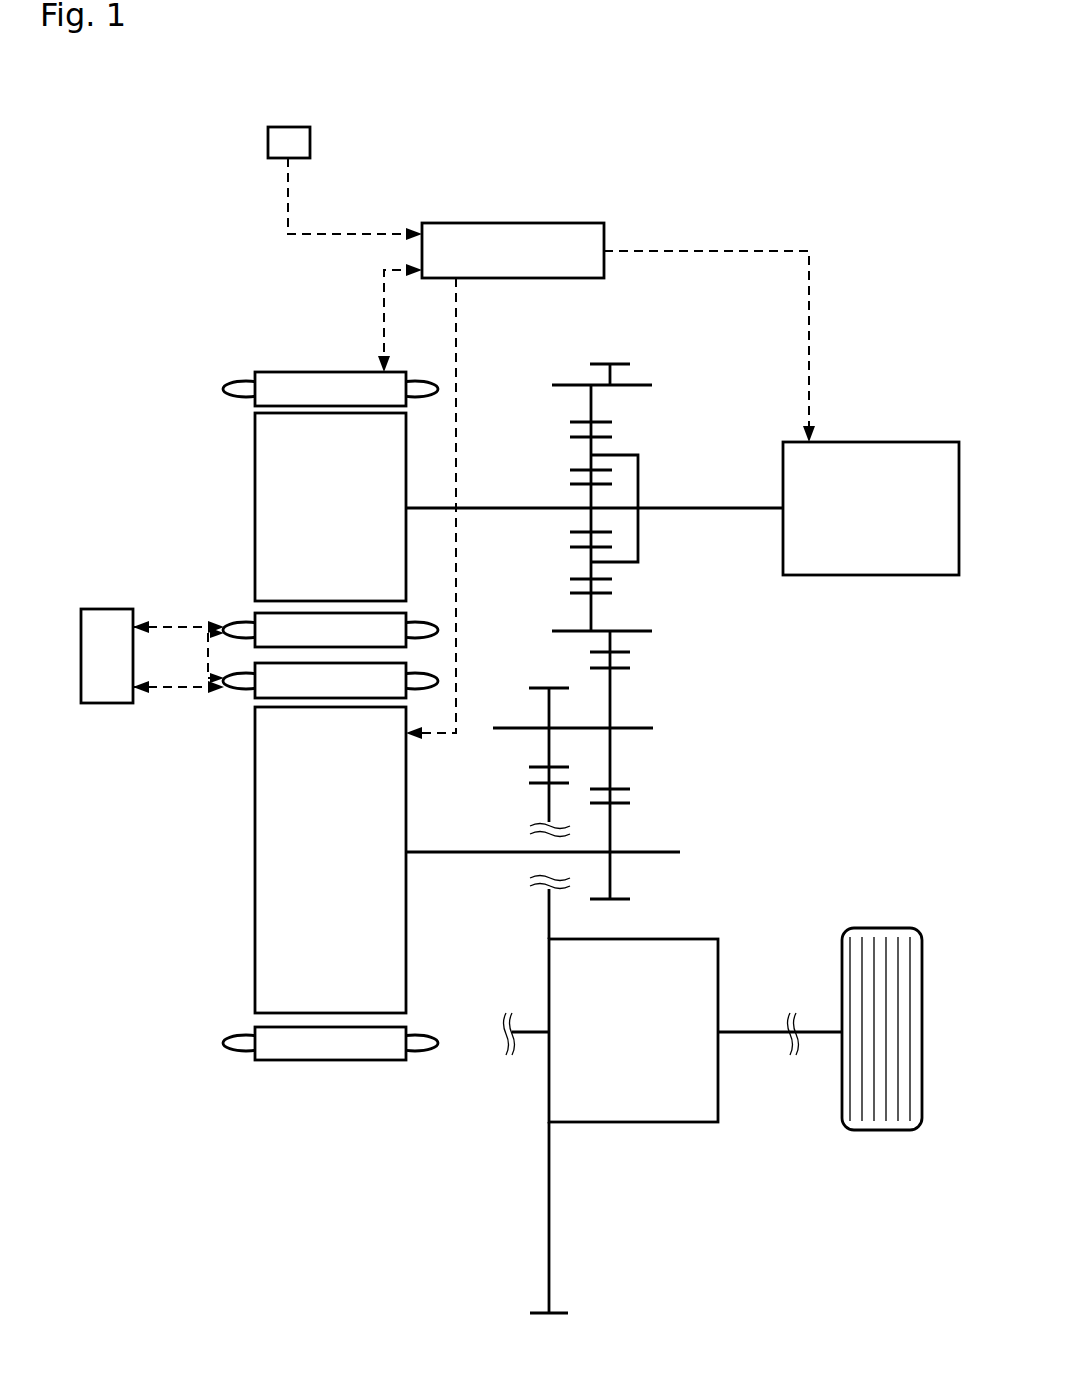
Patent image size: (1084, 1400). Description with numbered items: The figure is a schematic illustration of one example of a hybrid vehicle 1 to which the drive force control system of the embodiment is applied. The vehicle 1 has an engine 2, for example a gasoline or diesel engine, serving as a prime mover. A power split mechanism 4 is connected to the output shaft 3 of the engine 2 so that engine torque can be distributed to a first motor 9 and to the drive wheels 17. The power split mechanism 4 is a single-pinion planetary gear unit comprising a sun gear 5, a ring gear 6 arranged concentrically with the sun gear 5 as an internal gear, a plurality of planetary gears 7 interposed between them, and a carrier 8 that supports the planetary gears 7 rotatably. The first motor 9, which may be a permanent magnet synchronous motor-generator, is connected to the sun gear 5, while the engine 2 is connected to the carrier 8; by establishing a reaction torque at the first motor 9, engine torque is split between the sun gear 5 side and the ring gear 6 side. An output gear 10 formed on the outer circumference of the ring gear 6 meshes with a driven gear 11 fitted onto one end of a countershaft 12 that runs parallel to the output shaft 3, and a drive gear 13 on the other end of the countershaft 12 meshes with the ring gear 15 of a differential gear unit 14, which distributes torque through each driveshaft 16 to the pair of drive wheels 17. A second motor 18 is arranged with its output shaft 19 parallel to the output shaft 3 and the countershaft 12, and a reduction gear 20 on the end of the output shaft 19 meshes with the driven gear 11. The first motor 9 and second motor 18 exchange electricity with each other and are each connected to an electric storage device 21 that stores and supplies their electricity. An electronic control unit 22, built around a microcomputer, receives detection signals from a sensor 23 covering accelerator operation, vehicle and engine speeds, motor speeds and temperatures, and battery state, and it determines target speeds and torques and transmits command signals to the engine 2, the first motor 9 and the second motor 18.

The vehicle 1 is at (820, 214).
The engine 2 is at (887, 440).
The output shaft 3 is at (757, 505).
The power split mechanism 4 is at (546, 370).
The sun gear 5 is at (578, 480).
The ring gear 6 is at (575, 428).
The planetary gears 7 is at (605, 432).
The carrier 8 is at (640, 478).
The first motor 9 is at (318, 364).
The output gear 10 is at (613, 362).
The driven gear 11 is at (626, 663).
The countershaft 12 is at (648, 727).
The drive gear 13 is at (538, 687).
The differential gear unit 14 is at (683, 937).
The ring gear 15 is at (548, 1318).
The driveshaft 16 is at (762, 1027).
The drive wheels 17 is at (880, 928).
The second motor 18 is at (251, 873).
The output shaft 19 is at (470, 850).
The reduction gear 20 is at (628, 802).
The electric storage device 21 is at (106, 703).
The electronic control unit 22 is at (512, 222).
The sensor 23 is at (312, 142).